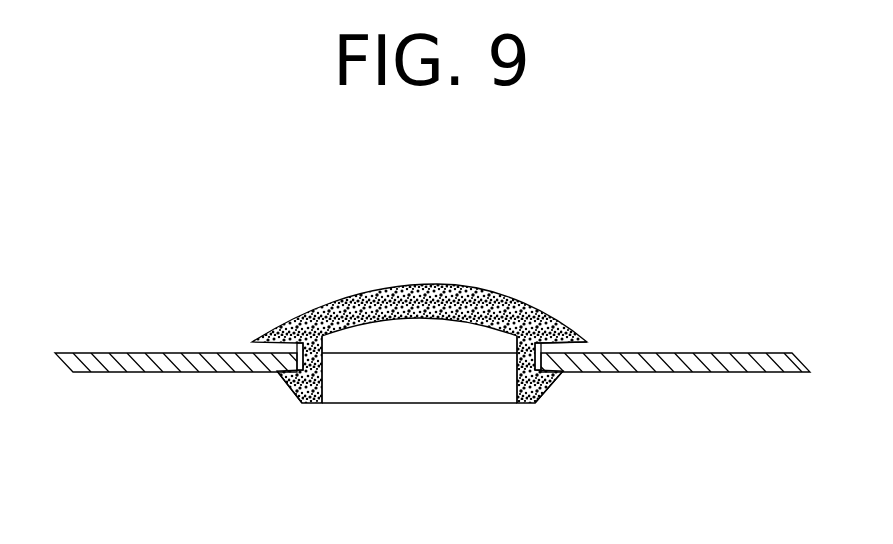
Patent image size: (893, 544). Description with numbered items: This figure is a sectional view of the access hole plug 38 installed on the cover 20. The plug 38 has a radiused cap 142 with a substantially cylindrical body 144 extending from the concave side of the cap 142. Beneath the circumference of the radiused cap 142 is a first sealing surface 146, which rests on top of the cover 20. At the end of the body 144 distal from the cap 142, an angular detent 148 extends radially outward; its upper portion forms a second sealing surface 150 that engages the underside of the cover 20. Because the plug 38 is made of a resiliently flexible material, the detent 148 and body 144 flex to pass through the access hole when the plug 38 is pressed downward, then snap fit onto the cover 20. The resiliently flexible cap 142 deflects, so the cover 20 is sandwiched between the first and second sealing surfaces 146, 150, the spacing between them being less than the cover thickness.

The cover 20 is at (668, 360).
The access hole plug 38 is at (415, 310).
The radiused cap 142 is at (421, 287).
The cylindrical body 144 is at (323, 372).
The first sealing surface 146 is at (581, 344).
The angular detent 148 is at (296, 393).
The second sealing surface 150 is at (563, 360).